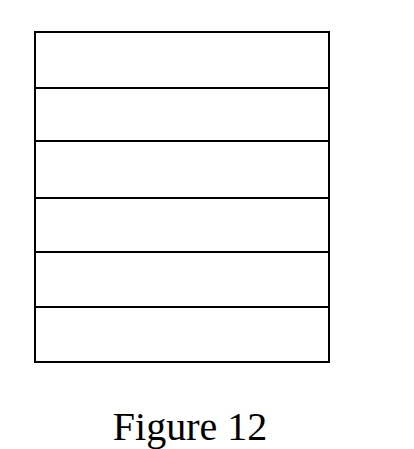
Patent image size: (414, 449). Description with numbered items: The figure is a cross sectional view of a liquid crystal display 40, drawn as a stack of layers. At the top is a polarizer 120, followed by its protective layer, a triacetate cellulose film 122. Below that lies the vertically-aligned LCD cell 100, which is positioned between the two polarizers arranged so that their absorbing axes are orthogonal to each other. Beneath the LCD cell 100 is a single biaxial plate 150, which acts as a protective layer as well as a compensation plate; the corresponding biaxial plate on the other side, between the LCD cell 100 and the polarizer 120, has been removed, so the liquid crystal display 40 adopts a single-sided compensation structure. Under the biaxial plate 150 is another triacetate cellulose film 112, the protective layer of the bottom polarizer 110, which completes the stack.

The liquid crystal display 40 is at (167, 25).
The polarizer 120 is at (182, 60).
The triacetate cellulose film 122 is at (182, 114).
The LCD cell 100 is at (182, 169).
The biaxial plate 150 is at (182, 225).
The triacetate cellulose film 112 is at (182, 279).
The polarizer 110 is at (182, 334).